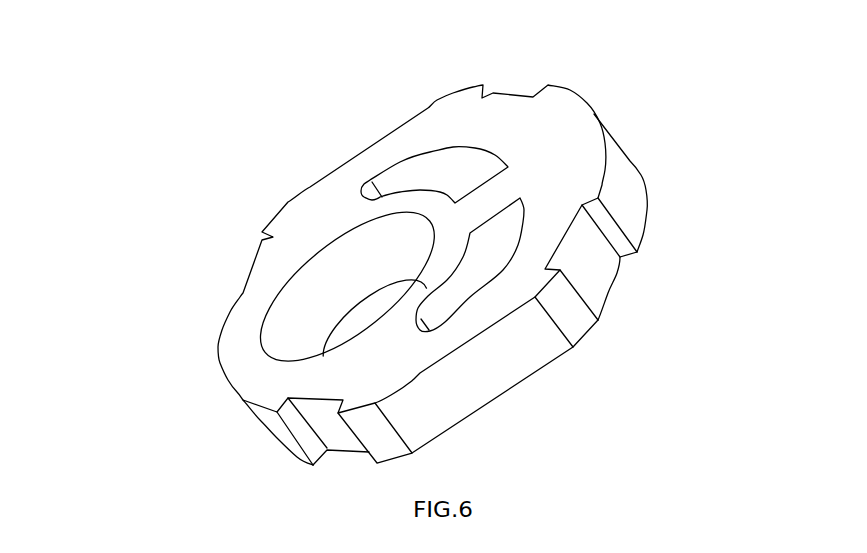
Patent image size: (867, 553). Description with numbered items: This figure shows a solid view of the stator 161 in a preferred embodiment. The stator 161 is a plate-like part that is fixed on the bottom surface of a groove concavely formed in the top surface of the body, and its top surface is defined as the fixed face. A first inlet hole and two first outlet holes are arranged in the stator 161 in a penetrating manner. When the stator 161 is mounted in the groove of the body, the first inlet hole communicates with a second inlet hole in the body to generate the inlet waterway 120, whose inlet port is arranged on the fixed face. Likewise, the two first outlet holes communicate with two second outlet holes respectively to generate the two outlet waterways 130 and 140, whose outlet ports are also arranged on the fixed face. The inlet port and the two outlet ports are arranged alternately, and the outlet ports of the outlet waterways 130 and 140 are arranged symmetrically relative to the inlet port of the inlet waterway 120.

The stator 161 is at (328, 205).
The inlet waterway 120 is at (310, 298).
The outlet waterway 130 is at (444, 175).
The outlet waterway 140 is at (488, 242).